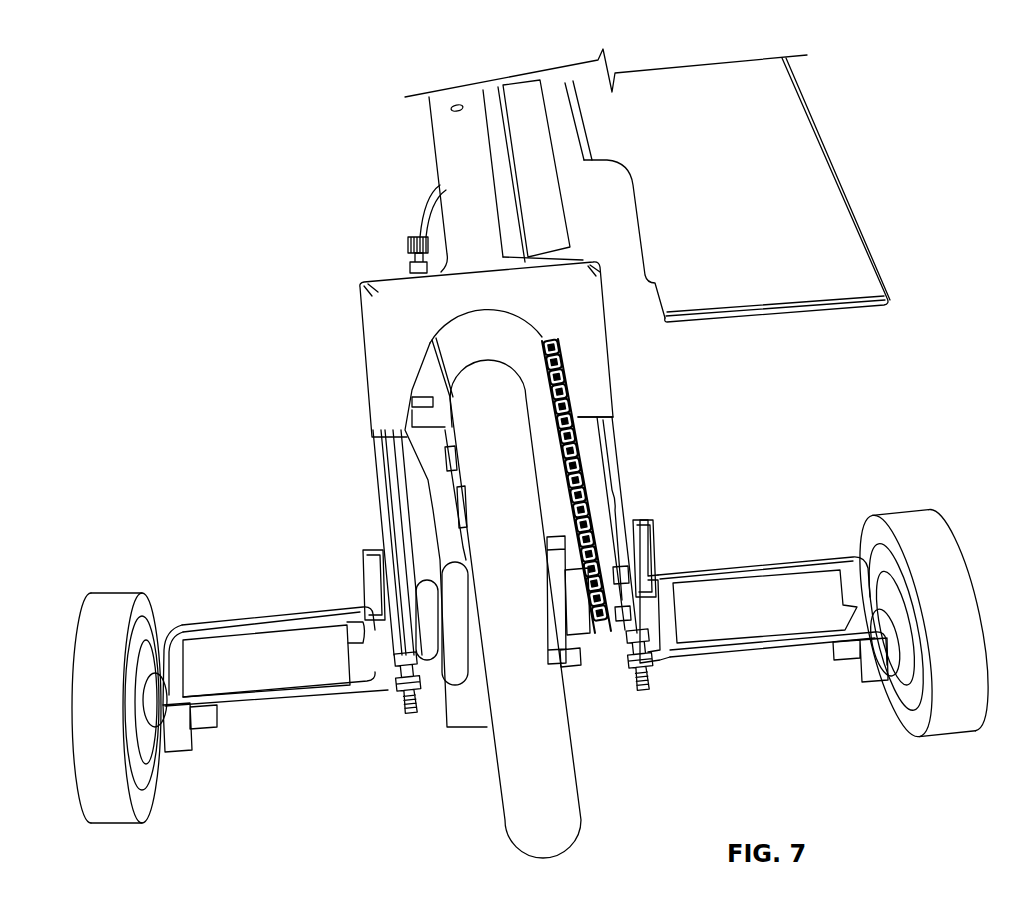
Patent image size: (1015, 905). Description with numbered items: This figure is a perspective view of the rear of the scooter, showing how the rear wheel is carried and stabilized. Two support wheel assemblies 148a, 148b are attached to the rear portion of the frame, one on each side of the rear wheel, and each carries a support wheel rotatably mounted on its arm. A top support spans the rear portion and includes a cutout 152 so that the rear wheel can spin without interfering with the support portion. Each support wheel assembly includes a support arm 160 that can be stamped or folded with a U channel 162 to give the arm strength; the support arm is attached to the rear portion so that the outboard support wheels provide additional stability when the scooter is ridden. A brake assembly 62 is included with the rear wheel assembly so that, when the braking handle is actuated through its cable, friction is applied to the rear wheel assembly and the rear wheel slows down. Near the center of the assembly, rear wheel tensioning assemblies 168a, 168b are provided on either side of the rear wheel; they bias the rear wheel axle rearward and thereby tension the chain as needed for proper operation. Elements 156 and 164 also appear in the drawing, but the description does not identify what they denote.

The brake assembly 62 is at (458, 710).
The support wheel assembly 148a is at (793, 514).
The support wheel assembly 148b is at (276, 597).
The cutout 152 is at (466, 342).
The mounting bracket 156 is at (386, 292).
The support arm 160 is at (760, 623).
The U channel 162 is at (738, 601).
The caster wheel 164 is at (890, 514).
The rear wheel tensioning assembly 168a is at (402, 703).
The rear wheel tensioning assembly 168b is at (650, 682).